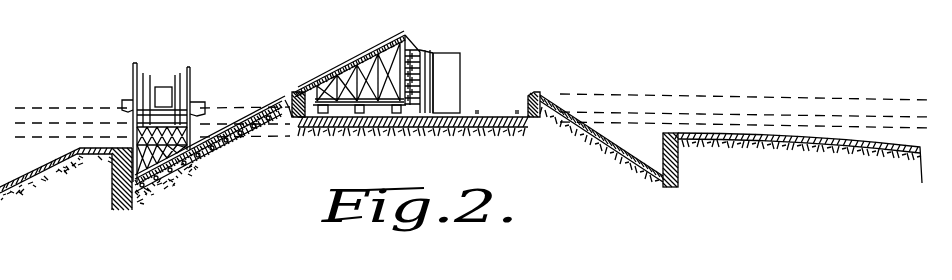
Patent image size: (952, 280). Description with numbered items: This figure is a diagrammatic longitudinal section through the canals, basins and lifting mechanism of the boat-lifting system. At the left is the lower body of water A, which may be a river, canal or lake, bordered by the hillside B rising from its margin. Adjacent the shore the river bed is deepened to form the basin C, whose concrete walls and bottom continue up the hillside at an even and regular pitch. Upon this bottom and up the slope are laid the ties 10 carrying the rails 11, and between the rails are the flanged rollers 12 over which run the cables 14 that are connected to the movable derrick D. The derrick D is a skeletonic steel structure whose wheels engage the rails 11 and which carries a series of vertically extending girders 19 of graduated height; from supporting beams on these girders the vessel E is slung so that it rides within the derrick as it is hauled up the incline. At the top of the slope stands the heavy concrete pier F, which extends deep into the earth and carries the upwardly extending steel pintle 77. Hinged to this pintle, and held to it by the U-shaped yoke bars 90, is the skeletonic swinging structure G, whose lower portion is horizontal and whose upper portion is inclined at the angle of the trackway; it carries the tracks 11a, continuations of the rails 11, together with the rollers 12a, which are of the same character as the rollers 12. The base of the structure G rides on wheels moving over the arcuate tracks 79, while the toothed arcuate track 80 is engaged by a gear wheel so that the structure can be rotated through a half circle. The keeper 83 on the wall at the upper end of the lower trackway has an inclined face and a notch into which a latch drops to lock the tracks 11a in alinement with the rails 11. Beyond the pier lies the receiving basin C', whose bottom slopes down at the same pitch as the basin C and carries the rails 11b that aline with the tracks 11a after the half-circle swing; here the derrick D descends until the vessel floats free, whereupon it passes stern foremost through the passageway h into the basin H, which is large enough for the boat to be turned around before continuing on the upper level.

The body of water A is at (38, 160).
The hillside B is at (221, 149).
The basin C is at (155, 189).
The receiving basin C' is at (652, 132).
The derrick D is at (190, 50).
The vessel E is at (197, 104).
The pier F is at (453, 29).
The swinging supporting structure G is at (343, 76).
The upper basin H is at (848, 132).
The passageway h is at (703, 112).
The ties 10 is at (190, 172).
The rails 11 is at (248, 124).
The tracks 11a is at (357, 53).
The rails 11b is at (556, 100).
The flanged rollers 12 is at (288, 95).
The rollers 12a is at (346, 73).
The cables 14 is at (232, 112).
The girders 19 is at (188, 86).
The pintle 77 is at (409, 54).
The arcuate tracks 79 is at (360, 113).
The arcuate track 80 is at (325, 113).
The keeper 83 is at (522, 93).
The U-shaped yoke bars 90 is at (420, 85).